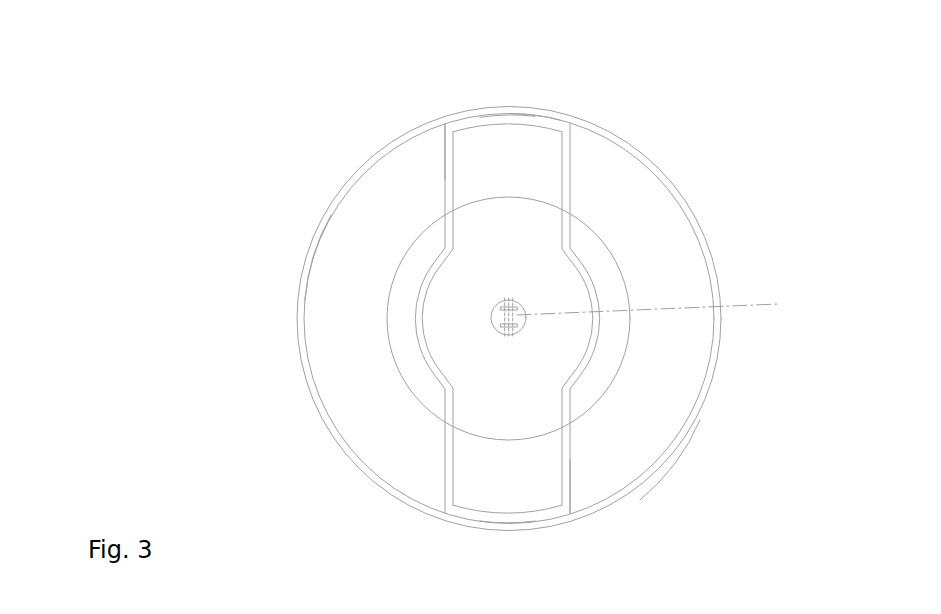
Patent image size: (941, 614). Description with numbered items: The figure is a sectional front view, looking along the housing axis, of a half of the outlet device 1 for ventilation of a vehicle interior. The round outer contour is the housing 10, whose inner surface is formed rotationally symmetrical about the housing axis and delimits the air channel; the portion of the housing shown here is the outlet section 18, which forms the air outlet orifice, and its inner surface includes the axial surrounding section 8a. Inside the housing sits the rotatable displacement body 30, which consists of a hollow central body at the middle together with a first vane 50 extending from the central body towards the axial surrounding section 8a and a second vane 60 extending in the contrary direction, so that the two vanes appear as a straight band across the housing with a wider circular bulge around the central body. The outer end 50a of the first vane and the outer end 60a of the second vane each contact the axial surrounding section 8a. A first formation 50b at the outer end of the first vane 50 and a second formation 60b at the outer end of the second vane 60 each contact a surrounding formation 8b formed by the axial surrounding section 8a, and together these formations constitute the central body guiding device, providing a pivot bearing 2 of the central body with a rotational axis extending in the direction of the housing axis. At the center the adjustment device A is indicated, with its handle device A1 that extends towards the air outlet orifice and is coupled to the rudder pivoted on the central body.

The outlet device 1 is at (825, 127).
The pivot bearing 2 is at (555, 115).
The housing 10 is at (363, 160).
The outlet section 18 is at (325, 218).
The axial surrounding section 8a is at (663, 452).
The surrounding formation 8b is at (528, 114).
The rotatable displacement body 30 is at (417, 282).
The second vane 60 is at (443, 195).
The outer end of the second vane 60a is at (446, 121).
The second formation 60b is at (510, 118).
The first vane 50 is at (443, 466).
The outer end of the first vane 50a is at (572, 517).
The first formation 50b is at (503, 521).
The handle device A1 is at (498, 318).
The adjustment device A is at (657, 306).